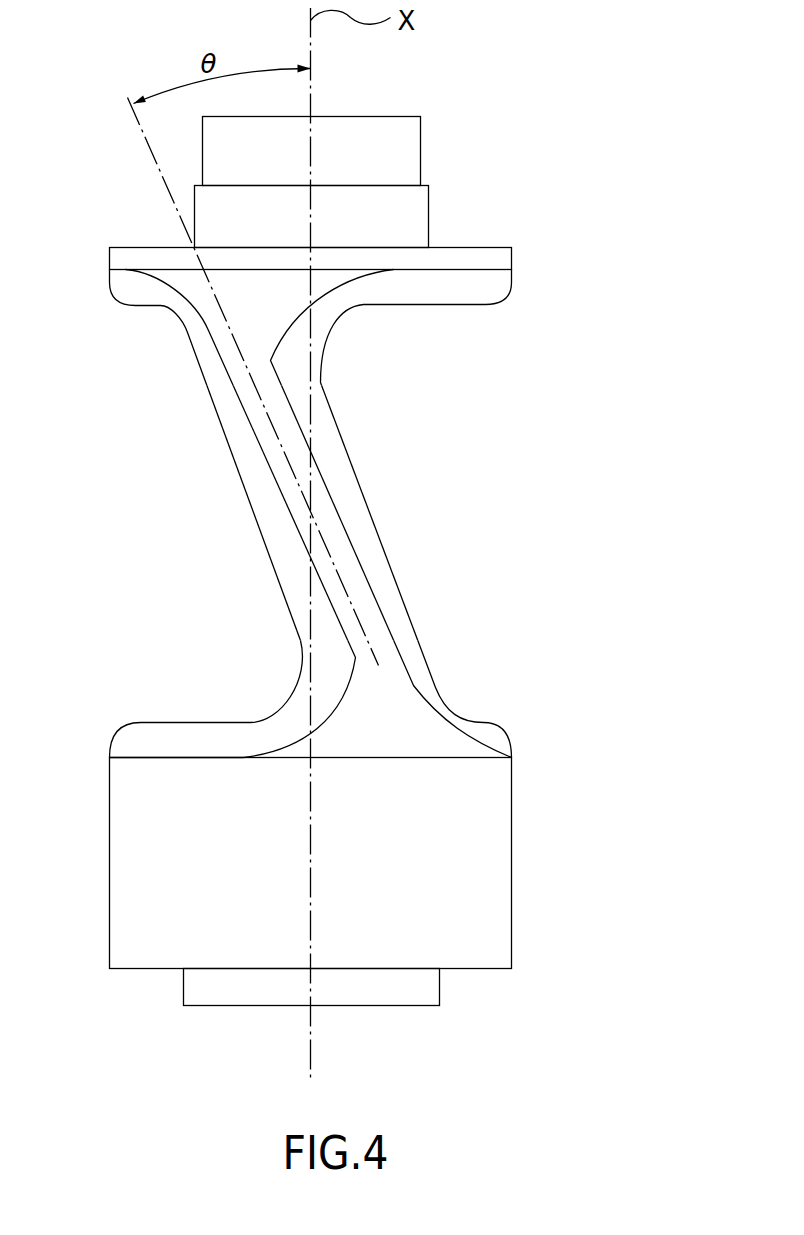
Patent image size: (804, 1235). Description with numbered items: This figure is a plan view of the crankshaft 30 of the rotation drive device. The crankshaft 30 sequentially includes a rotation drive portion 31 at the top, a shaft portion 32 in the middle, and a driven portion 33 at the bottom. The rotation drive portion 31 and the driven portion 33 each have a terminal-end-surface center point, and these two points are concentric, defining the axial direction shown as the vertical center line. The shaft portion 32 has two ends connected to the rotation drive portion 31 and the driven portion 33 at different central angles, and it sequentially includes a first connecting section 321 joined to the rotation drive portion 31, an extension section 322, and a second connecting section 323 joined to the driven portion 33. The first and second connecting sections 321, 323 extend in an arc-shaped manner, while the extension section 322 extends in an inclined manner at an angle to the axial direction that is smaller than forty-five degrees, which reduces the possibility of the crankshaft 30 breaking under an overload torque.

The crankshaft 30 is at (108, 188).
The rotation drive portion 31 is at (421, 150).
The shaft portion 32 is at (357, 503).
The first connecting section 321 is at (323, 310).
The extension section 322 is at (263, 489).
The second connecting section 323 is at (320, 667).
The driven portion 33 is at (512, 863).